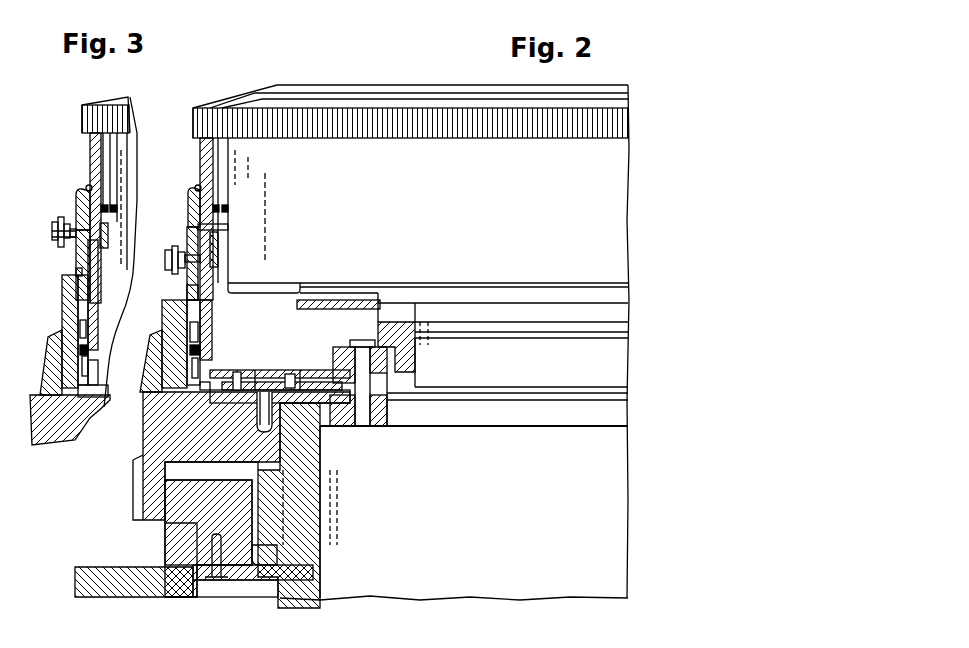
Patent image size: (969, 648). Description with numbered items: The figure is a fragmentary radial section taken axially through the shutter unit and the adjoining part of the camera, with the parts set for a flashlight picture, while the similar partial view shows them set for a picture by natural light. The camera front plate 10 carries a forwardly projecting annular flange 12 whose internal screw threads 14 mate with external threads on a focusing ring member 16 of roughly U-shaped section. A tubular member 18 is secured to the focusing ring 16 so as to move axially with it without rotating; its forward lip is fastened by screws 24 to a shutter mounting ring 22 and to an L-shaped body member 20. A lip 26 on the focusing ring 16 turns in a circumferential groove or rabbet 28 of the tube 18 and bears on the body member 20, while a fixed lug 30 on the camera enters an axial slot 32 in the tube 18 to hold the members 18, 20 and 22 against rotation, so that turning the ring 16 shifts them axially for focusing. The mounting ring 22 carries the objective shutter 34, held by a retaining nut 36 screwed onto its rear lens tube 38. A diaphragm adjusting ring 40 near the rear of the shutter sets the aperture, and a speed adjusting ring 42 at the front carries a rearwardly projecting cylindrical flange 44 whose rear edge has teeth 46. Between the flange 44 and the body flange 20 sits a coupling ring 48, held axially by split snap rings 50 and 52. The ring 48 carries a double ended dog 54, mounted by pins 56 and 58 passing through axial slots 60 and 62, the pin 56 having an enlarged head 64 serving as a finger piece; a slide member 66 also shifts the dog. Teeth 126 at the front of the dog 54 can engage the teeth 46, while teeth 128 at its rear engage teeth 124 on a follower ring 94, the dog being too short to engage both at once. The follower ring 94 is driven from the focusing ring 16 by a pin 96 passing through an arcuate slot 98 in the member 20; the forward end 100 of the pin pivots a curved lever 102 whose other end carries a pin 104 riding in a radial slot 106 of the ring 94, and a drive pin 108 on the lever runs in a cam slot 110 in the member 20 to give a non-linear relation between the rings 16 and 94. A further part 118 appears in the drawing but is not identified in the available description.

In FIG. 2, the front plate 10 is at (110, 567).
In FIG. 2, the annular flange 12 is at (178, 533).
In FIG. 2, the internal screw threads 14 is at (250, 507).
In FIG. 3, the focusing ring member 16 is at (55, 422).
In FIG. 2, the focusing ring member 16 is at (150, 428).
In FIG. 2, the tubular member 18 is at (320, 489).
In FIG. 3, the body member 20 is at (64, 294).
In FIG. 2, the body member 20 is at (175, 320).
In FIG. 2, the shutter mounting ring 22 is at (378, 330).
In FIG. 2, the screws 24 is at (338, 358).
In FIG. 2, the lip 26 is at (289, 505).
In FIG. 2, the circumferential groove or rabbet 28 is at (292, 410).
In FIG. 2, the fixed lug or finger 30 is at (313, 574).
In FIG. 2, the axial groove or slot 32 is at (300, 558).
In FIG. 3, the objective shutter 34 is at (136, 158).
In FIG. 2, the objective shutter 34 is at (618, 210).
In FIG. 2, the retaining nut 36 is at (400, 374).
In FIG. 2, the rear lens tube 38 is at (445, 375).
In FIG. 2, the diaphragm adjusting ring 40 is at (318, 309).
In FIG. 3, the speed adjusting ring 42 is at (90, 109).
In FIG. 2, the speed adjusting ring 42 is at (199, 108).
In FIG. 3, the cylindrical flange or skirt 44 is at (90, 142).
In FIG. 2, the cylindrical flange or skirt 44 is at (201, 148).
In FIG. 3, the notches or teeth 46 is at (110, 205).
In FIG. 2, the notches or teeth 46 is at (226, 207).
In FIG. 3, the coupling ring 48 is at (78, 194).
In FIG. 2, the coupling ring 48 is at (188, 196).
In FIG. 3, the split snap ring 50 is at (87, 185).
In FIG. 2, the split snap ring 50 is at (197, 185).
In FIG. 3, the split snap ring 52 is at (77, 272).
In FIG. 2, the split snap ring 52 is at (187, 292).
In FIG. 3, the double ended dog or pawl 54 is at (99, 294).
In FIG. 2, the double ended dog or pawl 54 is at (213, 320).
In FIG. 3, the pin 56 is at (78, 232).
In FIG. 2, the pin 56 is at (189, 250).
In FIG. 3, the pin 58 is at (89, 350).
In FIG. 2, the pin 58 is at (203, 346).
In FIG. 3, the axial slot 60 is at (52, 233).
In FIG. 2, the axial slot 60 is at (202, 225).
In FIG. 3, the axial slot 62 is at (87, 328).
In FIG. 2, the axial slot 62 is at (190, 332).
In FIG. 3, the enlarged head 64 is at (54, 226).
In FIG. 2, the enlarged head 64 is at (166, 250).
In FIG. 3, the slide member 66 is at (108, 232).
In FIG. 2, the slide member 66 is at (218, 246).
In FIG. 2, the follower ring 94 is at (297, 370).
In FIG. 2, the pin 96 is at (257, 410).
In FIG. 2, the arcuate slot 98 is at (225, 395).
In FIG. 2, the forward end of pin 100 is at (275, 384).
In FIG. 2, the curved lever 102 is at (283, 375).
In FIG. 2, the pin 104 is at (240, 374).
In FIG. 2, the radial slot 106 is at (256, 368).
In FIG. 2, the drive pin 108 is at (300, 370).
In FIG. 2, the cam slot 110 is at (362, 426).
In FIG. 3, the wedge support 118 is at (50, 363).
In FIG. 2, the wedge support 118 is at (153, 368).
In FIG. 3, the teeth or notches 124 is at (90, 370).
In FIG. 2, the teeth or notches 124 is at (200, 366).
In FIG. 3, the teeth 126 is at (97, 210).
In FIG. 2, the teeth 126 is at (222, 240).
In FIG. 3, the teeth 128 is at (100, 366).
In FIG. 2, the teeth 128 is at (203, 398).